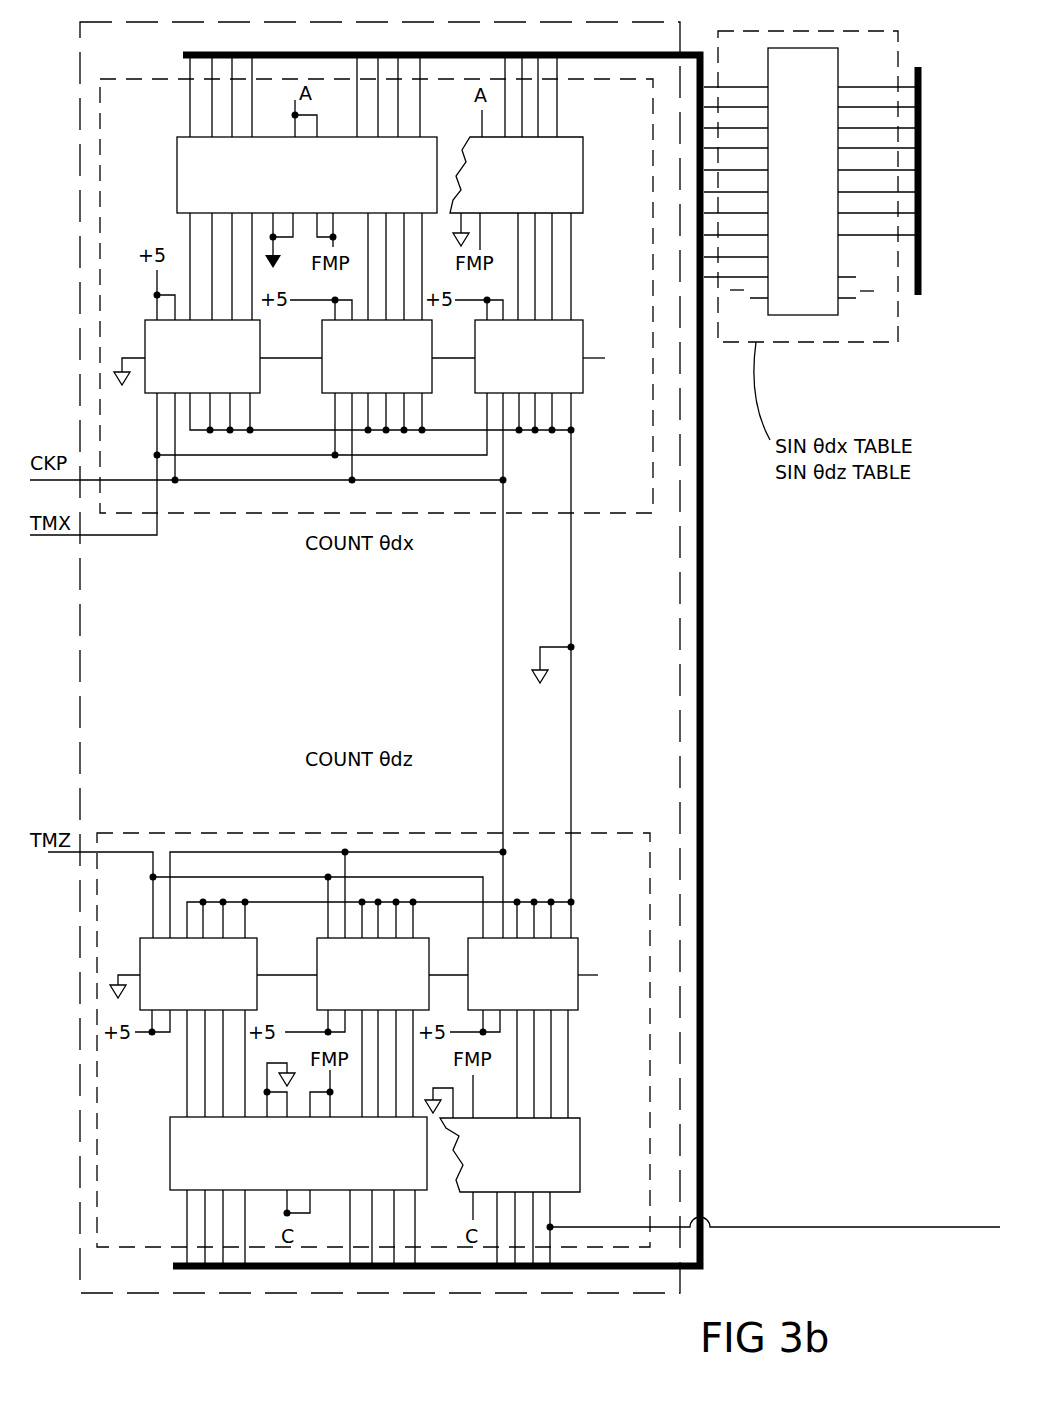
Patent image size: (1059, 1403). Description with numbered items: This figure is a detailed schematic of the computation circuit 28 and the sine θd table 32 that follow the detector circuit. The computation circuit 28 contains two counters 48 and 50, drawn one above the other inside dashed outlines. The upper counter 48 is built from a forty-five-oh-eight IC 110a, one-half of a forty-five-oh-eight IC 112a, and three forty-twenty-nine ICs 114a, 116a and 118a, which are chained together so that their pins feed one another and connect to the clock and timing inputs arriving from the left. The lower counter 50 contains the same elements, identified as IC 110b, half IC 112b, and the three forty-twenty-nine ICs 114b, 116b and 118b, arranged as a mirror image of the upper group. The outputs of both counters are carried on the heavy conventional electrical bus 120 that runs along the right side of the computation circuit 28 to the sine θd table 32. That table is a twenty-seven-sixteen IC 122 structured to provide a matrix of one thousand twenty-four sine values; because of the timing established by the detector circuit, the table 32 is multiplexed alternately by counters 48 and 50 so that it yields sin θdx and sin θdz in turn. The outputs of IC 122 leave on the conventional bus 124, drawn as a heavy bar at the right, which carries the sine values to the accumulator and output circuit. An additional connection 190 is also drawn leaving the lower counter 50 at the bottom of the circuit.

The computation circuit 28 is at (680, 44).
The sine θd table 32 is at (884, 32).
The counter 48 is at (130, 78).
The counter 50 is at (226, 832).
The 4508 IC 110a is at (183, 136).
The one-half of a 4508 IC 112a is at (574, 137).
The 4029 IC 114a is at (252, 393).
The 4029 IC 116a is at (430, 393).
The 4029 IC 118a is at (580, 393).
The 4508 IC 110b is at (170, 1178).
The one-half of a 4508 IC 112b is at (580, 1180).
The 4029 IC 114b is at (257, 947).
The 4029 IC 116b is at (429, 947).
The 4029 IC 118b is at (578, 947).
The address bus 120 is at (704, 701).
The 2716 IC 122 is at (824, 318).
The bus 124 is at (920, 298).
The output line 190 is at (890, 1227).